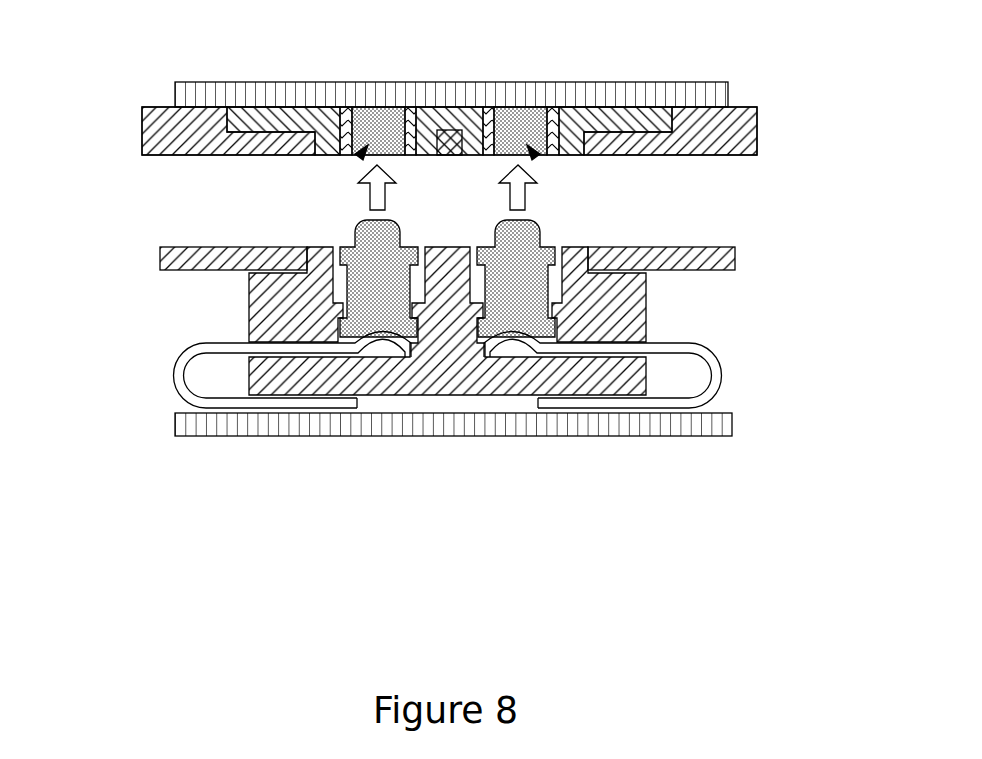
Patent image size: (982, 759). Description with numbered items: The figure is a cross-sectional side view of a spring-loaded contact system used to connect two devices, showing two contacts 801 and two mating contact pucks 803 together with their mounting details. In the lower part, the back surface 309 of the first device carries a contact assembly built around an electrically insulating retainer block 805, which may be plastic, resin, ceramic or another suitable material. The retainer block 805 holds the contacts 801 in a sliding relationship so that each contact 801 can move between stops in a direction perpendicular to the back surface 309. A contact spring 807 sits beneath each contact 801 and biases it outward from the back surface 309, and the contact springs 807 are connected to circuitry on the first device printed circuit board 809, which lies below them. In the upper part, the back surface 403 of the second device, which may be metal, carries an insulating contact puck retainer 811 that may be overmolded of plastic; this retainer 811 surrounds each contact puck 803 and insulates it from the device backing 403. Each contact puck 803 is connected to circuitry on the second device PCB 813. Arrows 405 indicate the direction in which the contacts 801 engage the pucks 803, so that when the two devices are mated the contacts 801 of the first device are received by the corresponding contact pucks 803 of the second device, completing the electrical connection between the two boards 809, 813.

The back surface 309 is at (158, 264).
The back surface 403 is at (142, 141).
The thermal contact openings 405 is at (359, 157).
The contact 801 is at (353, 238).
The contact puck 803 is at (412, 114).
The retainer block 805 is at (625, 298).
The contact spring 807 is at (183, 372).
The printed circuit board 809 is at (620, 437).
The contact puck retainer 811 is at (632, 112).
The PCB 813 is at (727, 83).